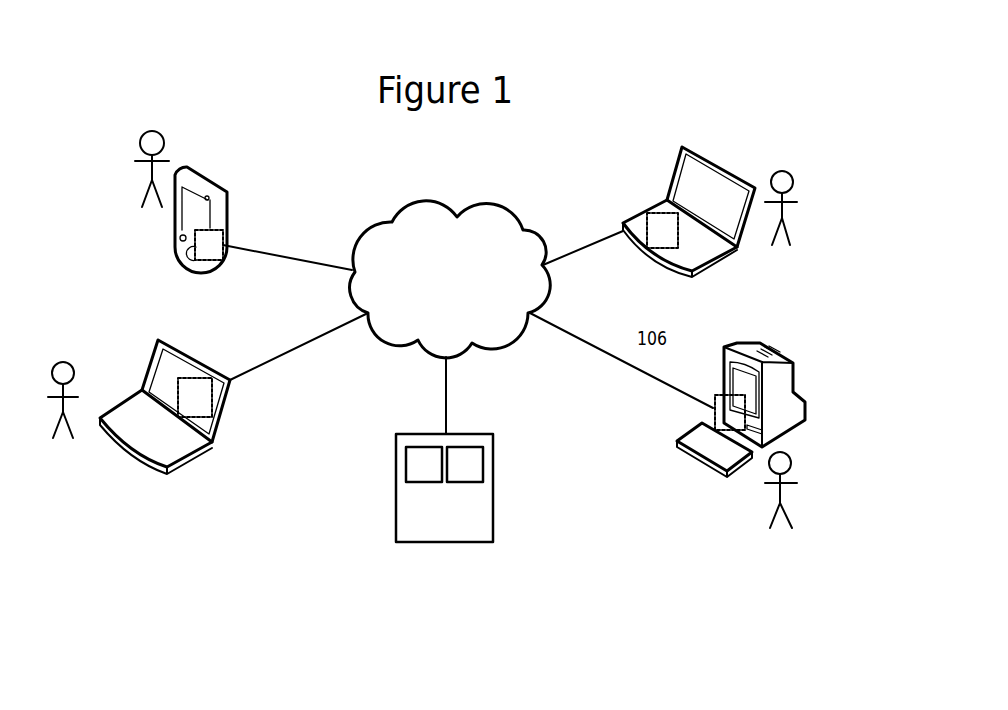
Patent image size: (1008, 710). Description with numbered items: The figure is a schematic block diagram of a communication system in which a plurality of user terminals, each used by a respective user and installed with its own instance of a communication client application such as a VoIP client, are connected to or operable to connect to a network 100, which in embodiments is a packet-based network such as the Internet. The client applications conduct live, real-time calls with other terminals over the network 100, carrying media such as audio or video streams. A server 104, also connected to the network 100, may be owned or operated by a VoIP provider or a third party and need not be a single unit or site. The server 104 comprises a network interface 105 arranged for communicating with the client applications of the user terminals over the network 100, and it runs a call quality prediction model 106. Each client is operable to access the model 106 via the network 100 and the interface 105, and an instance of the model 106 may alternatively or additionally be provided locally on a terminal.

The network 100 is at (512, 212).
The server 104 is at (453, 542).
The network interface 105 is at (406, 465).
The call quality prediction model 106 is at (484, 463).